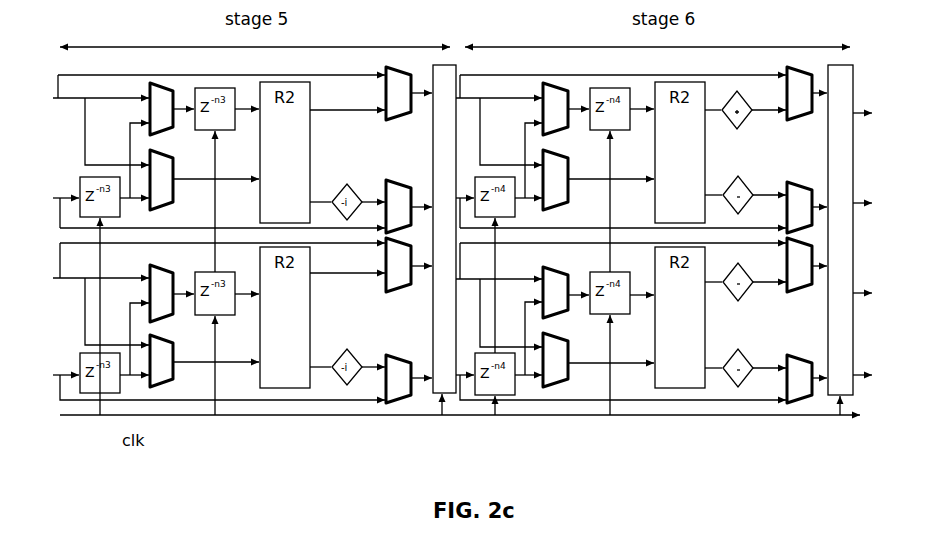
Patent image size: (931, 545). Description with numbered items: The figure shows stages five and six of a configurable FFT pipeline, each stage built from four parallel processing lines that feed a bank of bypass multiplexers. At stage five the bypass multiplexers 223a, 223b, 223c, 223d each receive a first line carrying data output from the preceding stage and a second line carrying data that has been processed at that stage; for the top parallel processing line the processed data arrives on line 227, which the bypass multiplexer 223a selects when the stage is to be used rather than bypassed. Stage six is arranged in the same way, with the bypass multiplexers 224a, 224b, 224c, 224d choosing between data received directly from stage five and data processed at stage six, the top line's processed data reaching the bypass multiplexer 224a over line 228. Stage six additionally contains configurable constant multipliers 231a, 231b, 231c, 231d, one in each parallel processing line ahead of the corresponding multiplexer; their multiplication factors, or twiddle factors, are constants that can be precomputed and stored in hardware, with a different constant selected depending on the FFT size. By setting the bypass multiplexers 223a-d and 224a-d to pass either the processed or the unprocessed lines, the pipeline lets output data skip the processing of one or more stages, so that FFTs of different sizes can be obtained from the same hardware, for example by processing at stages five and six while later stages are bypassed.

The bypass multiplexer 223a is at (389, 67).
The bypass multiplexer 223b is at (414, 157).
The bypass multiplexer 223c is at (405, 292).
The bypass multiplexer 223d is at (390, 403).
The line 227 is at (330, 111).
The bypass multiplexer 224a is at (789, 67).
The bypass multiplexer 224b is at (797, 182).
The bypass multiplexer 224c is at (808, 292).
The bypass multiplexer 224d is at (792, 404).
The line 228 is at (746, 118).
The configurable constant multiplier 231a is at (730, 96).
The configurable constant multiplier 231b is at (730, 186).
The configurable constant multiplier 231c is at (740, 301).
The configurable constant multiplier 231d is at (737, 387).